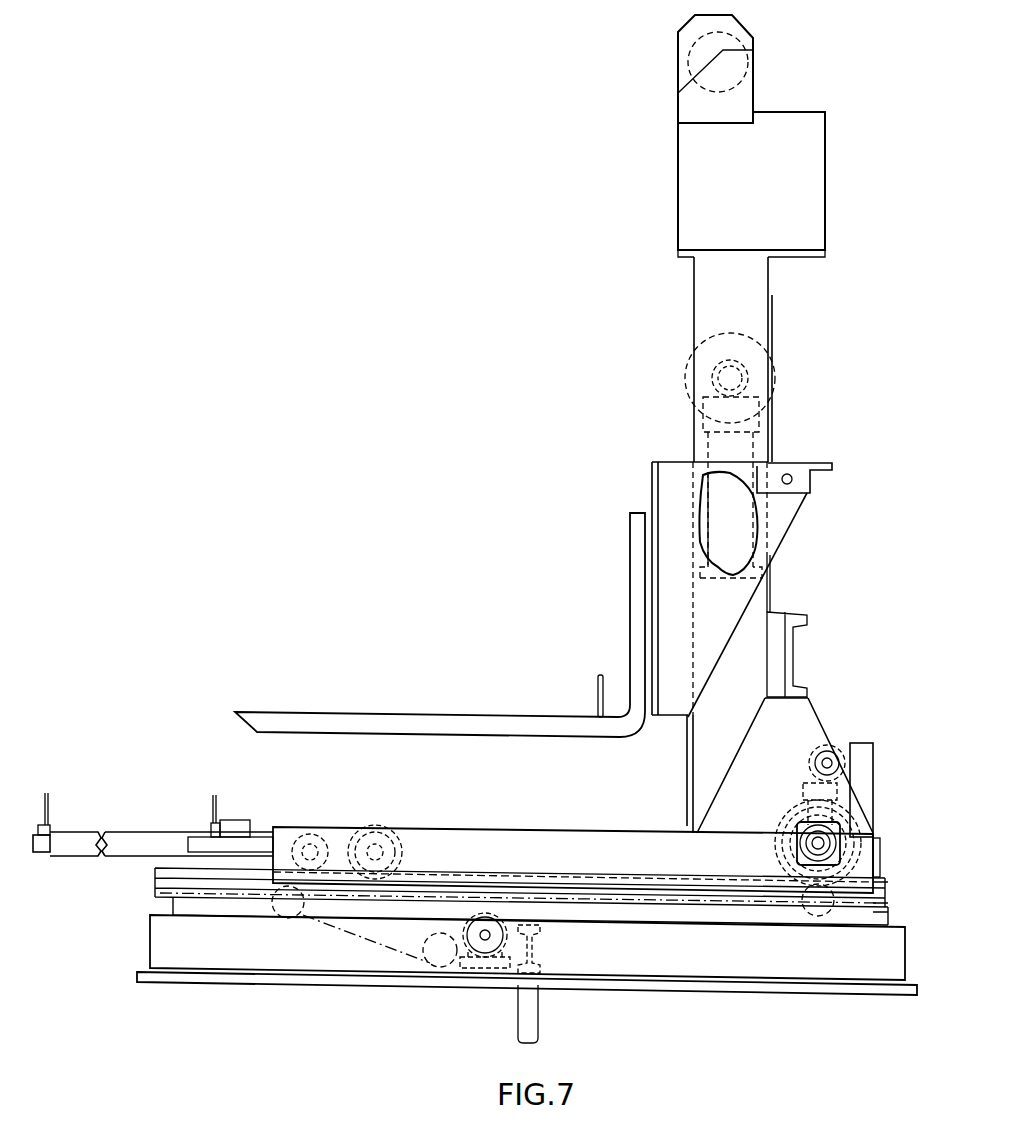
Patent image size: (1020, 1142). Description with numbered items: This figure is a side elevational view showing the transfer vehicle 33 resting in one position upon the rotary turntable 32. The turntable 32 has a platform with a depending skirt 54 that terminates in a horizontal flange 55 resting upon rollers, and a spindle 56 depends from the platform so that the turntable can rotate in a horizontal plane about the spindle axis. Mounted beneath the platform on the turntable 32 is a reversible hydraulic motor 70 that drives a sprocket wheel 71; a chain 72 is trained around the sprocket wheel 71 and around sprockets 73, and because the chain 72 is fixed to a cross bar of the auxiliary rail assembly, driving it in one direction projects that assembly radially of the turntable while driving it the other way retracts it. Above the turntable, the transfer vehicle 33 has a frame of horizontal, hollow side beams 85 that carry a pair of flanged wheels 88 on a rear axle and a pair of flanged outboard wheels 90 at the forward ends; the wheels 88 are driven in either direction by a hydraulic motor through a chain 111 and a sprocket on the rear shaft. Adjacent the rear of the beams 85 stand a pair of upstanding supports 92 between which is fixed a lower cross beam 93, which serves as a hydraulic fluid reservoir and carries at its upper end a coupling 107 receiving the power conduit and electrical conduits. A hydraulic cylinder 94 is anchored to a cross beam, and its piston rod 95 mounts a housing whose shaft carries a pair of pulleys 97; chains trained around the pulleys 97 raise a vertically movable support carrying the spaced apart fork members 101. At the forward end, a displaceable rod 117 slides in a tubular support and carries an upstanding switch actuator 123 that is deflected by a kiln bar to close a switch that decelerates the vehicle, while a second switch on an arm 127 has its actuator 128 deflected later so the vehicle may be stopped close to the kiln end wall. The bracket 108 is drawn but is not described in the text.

The coupling 107 is at (753, 31).
The lower cross beam 93 is at (683, 183).
The upstanding supports 92 is at (700, 300).
The pulleys 97 is at (686, 380).
The hydraulic cylinder 94 is at (690, 617).
The bracket 108 is at (818, 463).
The piston rod 95 is at (745, 516).
The transfer vehicle 33 is at (565, 538).
The fork members 101 is at (340, 712).
The chain 111 is at (805, 798).
The flanged wheels 88 is at (782, 850).
The side beams 85 is at (497, 838).
The flanged outboard wheels 90 is at (400, 846).
The turntable 32 is at (110, 927).
The depending skirt 54 is at (210, 960).
The horizontal flange 55 is at (249, 984).
The spindle 56 is at (540, 1021).
The sprocket wheel 71 is at (480, 944).
The reversible hydraulic motor 70 is at (540, 952).
The chain 72 is at (357, 941).
The sprockets 73 is at (303, 912).
The displaceable rod 117 is at (43, 854).
The switch actuator 123 is at (50, 802).
The arm 127 is at (193, 838).
The actuator 128 is at (218, 805).